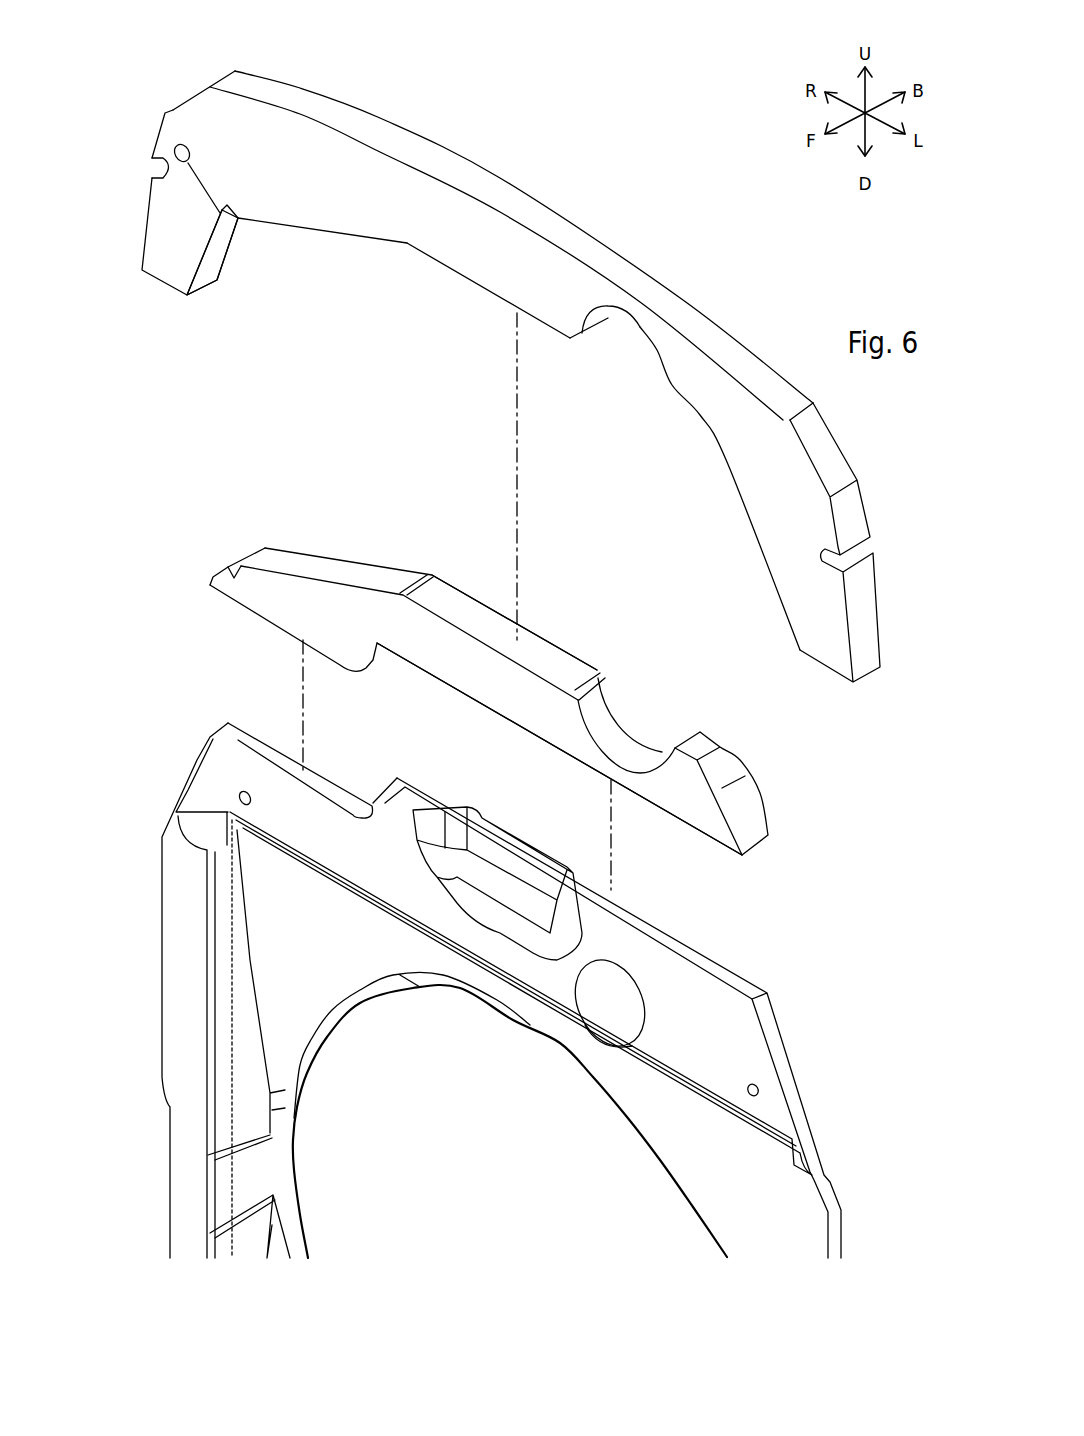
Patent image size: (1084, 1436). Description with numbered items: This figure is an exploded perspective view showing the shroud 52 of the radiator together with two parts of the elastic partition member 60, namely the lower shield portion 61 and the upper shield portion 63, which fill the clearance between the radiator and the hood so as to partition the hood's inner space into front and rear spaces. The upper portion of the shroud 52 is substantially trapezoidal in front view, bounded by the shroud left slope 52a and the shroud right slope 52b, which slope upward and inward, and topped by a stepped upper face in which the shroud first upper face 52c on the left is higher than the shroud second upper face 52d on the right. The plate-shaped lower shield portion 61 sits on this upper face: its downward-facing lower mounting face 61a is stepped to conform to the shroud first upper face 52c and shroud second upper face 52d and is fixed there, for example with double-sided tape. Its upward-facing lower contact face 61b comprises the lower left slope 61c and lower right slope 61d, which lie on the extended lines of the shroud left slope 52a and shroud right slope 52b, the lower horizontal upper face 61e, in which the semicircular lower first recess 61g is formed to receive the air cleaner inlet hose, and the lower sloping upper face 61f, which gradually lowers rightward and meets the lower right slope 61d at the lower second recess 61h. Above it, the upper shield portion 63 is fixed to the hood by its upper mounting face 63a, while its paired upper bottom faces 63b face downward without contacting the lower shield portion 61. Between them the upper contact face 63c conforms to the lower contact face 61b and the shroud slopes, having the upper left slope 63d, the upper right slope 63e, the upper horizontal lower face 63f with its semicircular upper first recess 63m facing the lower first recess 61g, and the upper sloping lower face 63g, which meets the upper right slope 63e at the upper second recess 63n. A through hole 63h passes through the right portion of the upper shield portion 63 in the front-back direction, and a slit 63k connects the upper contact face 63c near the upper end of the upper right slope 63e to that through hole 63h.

The partition member 60 is at (826, 261).
The upper shield portion 63 is at (683, 216).
The upper mounting face 63a is at (562, 226).
The upper bottom faces 63b is at (168, 297).
The upper contact face 63c is at (500, 318).
The upper left slope 63d is at (747, 530).
The upper right slope 63e is at (220, 285).
The upper horizontal lower face 63f is at (458, 277).
The upper sloping lower face 63g is at (340, 238).
The through hole 63h is at (177, 150).
The slit 63k is at (167, 168).
The upper first recess 63m is at (621, 318).
The upper second recess 63n is at (226, 215).
The lower shield portion 61 is at (612, 626).
The lower mounting face 61a is at (490, 718).
The lower contact face 61b is at (550, 645).
The lower left slope 61c is at (750, 800).
The lower right slope 61d is at (212, 583).
The lower horizontal upper face 61e is at (455, 600).
The lower sloping upper face 61f is at (320, 568).
The lower first recess 61g is at (636, 752).
The lower second recess 61h is at (235, 572).
The shroud 52 is at (826, 980).
The shroud left slope 52a is at (795, 1067).
The shroud right slope 52b is at (206, 768).
The shroud first upper face 52c is at (690, 947).
The shroud second upper face 52d is at (262, 740).